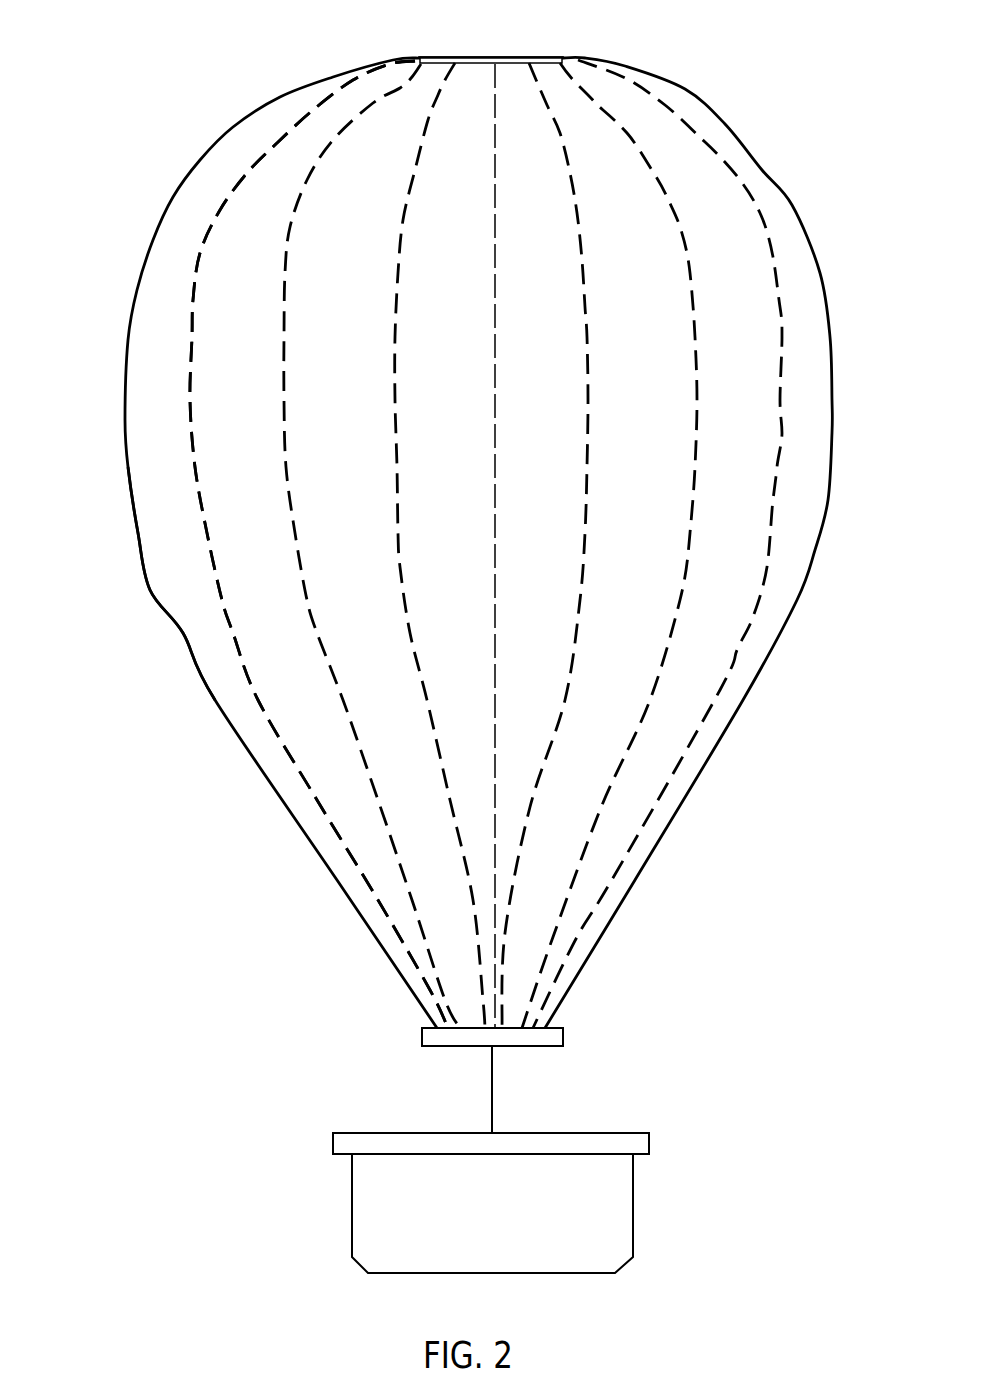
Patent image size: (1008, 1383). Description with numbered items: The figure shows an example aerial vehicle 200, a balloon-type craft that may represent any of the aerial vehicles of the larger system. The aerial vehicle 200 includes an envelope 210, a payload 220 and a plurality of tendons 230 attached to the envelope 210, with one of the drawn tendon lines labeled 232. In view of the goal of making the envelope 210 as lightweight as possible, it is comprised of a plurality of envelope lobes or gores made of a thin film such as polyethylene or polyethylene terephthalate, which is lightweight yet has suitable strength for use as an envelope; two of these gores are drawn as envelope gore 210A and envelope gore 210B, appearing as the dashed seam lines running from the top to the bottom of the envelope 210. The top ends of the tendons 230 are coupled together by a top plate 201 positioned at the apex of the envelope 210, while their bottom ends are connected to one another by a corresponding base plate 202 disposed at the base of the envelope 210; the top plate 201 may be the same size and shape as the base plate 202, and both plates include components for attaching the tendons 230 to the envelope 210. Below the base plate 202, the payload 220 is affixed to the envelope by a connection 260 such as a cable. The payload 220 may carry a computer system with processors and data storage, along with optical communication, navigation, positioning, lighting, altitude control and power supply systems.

The aerial vehicle 200 is at (204, 43).
The top plate 201 is at (497, 55).
The base plate 202 is at (422, 1030).
The envelope 210 is at (735, 124).
The envelope gore 210A is at (176, 515).
The envelope gore 210B is at (270, 602).
The payload 220 is at (333, 1133).
The tendon 230 is at (223, 210).
The tendon 232 is at (688, 270).
The connection 260 is at (492, 1088).